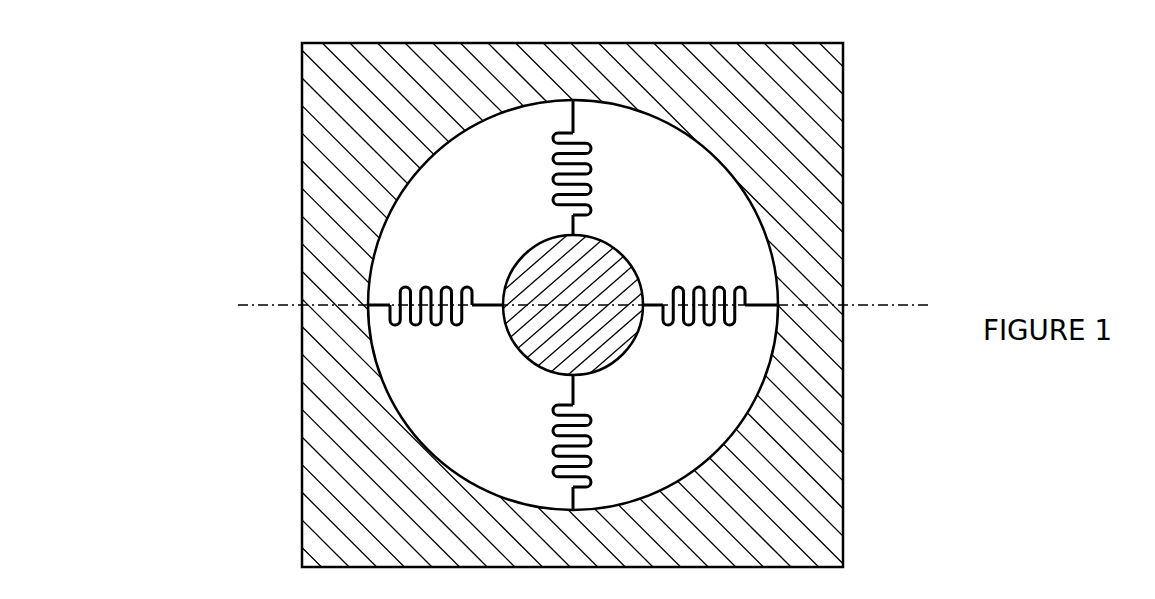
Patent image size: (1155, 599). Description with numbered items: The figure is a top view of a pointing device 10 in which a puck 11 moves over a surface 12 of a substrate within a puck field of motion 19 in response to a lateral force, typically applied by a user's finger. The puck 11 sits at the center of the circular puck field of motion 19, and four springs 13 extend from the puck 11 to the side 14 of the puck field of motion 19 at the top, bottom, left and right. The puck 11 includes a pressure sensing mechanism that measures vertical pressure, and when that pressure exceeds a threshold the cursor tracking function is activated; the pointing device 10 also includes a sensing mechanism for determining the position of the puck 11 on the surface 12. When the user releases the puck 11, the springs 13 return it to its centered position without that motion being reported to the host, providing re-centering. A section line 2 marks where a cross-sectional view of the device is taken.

The pointing device 10 is at (147, 116).
The puck 11 is at (610, 257).
The surface 12 is at (673, 451).
The springs 13 is at (728, 326).
The side of the puck field of motion 14 is at (835, 488).
The puck field of motion 19 is at (715, 210).
The line 2- 2 is at (252, 315).